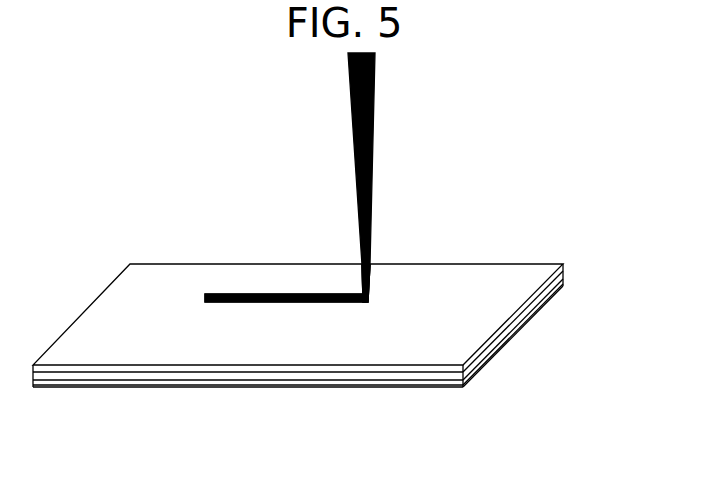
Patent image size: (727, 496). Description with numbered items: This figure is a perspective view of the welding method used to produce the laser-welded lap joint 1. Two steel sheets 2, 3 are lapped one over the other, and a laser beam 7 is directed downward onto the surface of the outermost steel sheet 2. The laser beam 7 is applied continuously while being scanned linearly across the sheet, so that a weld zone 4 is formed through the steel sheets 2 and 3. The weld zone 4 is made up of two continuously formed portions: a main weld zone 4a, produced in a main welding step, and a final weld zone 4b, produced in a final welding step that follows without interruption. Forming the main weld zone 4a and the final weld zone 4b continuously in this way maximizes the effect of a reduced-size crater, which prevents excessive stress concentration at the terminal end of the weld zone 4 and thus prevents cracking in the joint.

The laser-welded lap joint 1 is at (546, 134).
The steel sheet 2 is at (412, 357).
The steel sheet 3 is at (451, 382).
The weld zone 4 is at (202, 447).
The main weld zone 4a is at (260, 302).
The final weld zone 4b is at (352, 302).
The laser beam 7 is at (348, 82).